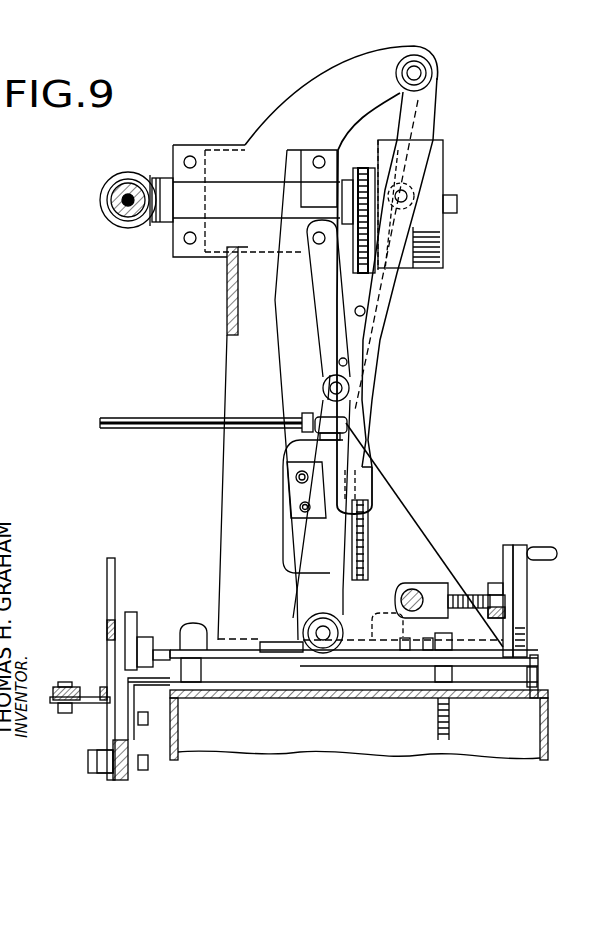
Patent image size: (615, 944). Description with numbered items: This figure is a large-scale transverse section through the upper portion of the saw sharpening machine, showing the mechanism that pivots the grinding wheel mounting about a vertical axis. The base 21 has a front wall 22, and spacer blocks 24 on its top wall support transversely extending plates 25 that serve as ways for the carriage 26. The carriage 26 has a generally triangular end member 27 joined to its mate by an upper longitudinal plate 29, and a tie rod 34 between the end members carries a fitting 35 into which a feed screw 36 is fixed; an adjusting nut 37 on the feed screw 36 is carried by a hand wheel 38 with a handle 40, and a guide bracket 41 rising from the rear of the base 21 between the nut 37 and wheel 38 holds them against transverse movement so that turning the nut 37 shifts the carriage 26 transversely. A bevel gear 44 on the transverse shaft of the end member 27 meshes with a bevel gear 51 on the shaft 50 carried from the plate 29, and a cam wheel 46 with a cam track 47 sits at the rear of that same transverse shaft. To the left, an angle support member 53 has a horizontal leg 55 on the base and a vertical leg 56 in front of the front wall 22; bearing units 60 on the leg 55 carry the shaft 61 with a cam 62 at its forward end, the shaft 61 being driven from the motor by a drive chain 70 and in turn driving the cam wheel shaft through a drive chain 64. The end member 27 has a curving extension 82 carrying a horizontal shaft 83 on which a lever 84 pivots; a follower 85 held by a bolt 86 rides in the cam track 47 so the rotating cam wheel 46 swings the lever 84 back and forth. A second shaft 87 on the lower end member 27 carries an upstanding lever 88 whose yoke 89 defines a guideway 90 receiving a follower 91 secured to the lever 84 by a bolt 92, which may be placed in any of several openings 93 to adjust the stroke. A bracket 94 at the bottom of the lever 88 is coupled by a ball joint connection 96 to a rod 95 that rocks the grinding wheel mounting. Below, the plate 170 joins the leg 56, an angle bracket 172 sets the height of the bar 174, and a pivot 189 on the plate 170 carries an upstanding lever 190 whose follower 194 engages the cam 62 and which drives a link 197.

The extension 82 is at (355, 72).
The horizontal shaft 83 is at (415, 73).
The lever 84 is at (420, 115).
The bevel gear 44 is at (160, 185).
The bevel gear 51 is at (118, 180).
The shaft 50 is at (124, 205).
The upper longitudinally extending plate 29 is at (227, 290).
The guideway 90 is at (322, 300).
The openings 93 is at (366, 312).
The follower 91 is at (330, 378).
The upstanding lever 88 is at (285, 372).
The bolt 92 is at (342, 388).
The yoke 89 is at (370, 400).
The ball joint connection 96 is at (350, 425).
The rod 95 is at (190, 432).
The bracket 94 is at (285, 477).
The end member 27 is at (390, 473).
The carriage 26 is at (417, 493).
The drive chain 64 is at (362, 535).
The cam wheel 46 is at (425, 240).
The follower 85 is at (410, 197).
The bolt 86 is at (445, 205).
The cam track 47 is at (403, 258).
The second shaft 87 is at (316, 628).
The transversely extending plates 25 is at (540, 655).
The spacer blocks 24 is at (545, 680).
The base 21 is at (550, 725).
The angle support member 53 is at (147, 692).
The vertical leg 56 is at (183, 746).
The horizontal leg 55 is at (260, 685).
The front wall 22 is at (165, 750).
The drive chain 70 is at (450, 713).
The bearing units 60 is at (192, 625).
The cam 62 is at (132, 612).
The shaft 61 is at (148, 640).
The bar or plate 170 is at (128, 775).
The follower 194 is at (110, 630).
The upstanding lever 190 is at (110, 640).
The link 197 is at (106, 690).
The horizontally disposed bar 174 is at (65, 687).
The angle bracket 172 is at (65, 713).
The pivot 189 is at (88, 760).
The tie rod 34 is at (412, 590).
The fitting 35 is at (430, 583).
The feed screw 36 is at (468, 598).
The adjusting nut 37 is at (496, 583).
The handle 40 is at (555, 548).
The adjusting hand wheel 38 is at (527, 598).
The guide bracket 41 is at (513, 622).